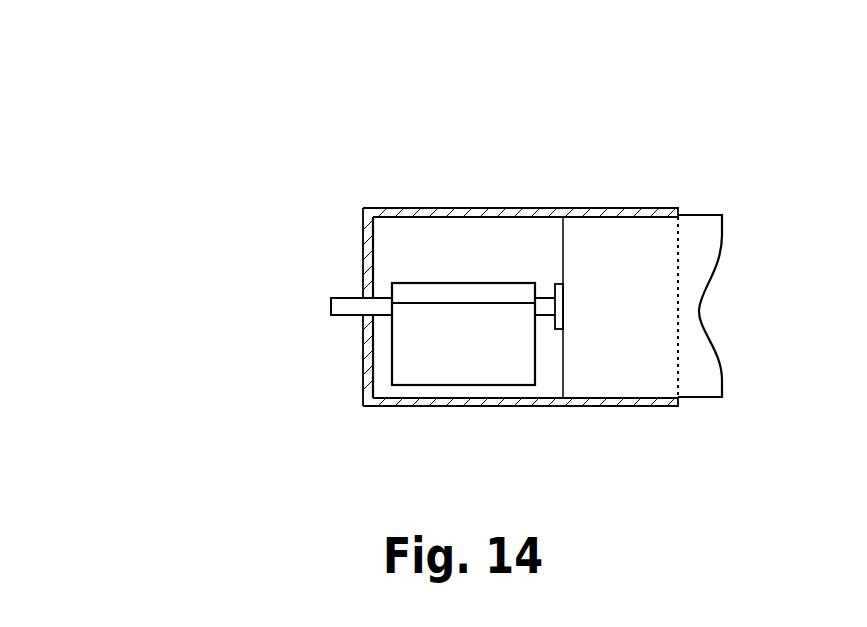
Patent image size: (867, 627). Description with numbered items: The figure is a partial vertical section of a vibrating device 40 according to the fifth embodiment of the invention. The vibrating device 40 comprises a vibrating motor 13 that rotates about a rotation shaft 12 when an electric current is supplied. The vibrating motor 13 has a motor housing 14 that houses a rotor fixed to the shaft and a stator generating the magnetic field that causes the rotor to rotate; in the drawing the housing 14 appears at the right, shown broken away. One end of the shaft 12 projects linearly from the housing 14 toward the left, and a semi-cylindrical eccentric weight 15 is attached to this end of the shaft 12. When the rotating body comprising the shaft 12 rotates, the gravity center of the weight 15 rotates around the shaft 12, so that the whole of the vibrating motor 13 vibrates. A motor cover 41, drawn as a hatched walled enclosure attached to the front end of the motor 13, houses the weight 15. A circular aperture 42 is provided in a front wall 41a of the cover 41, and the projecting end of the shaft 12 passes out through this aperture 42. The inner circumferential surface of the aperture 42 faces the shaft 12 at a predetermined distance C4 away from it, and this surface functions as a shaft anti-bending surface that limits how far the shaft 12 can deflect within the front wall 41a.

The vibrating device 40 is at (404, 152).
The motor cover 41 is at (543, 208).
The front wall 41a is at (362, 236).
The circular aperture 42 is at (362, 290).
The rotation shaft 12 is at (333, 317).
The eccentric weight 15 is at (432, 365).
The predetermined distance C4 is at (350, 328).
The vibrating motor 13 is at (701, 193).
The motor housing 14 is at (697, 404).